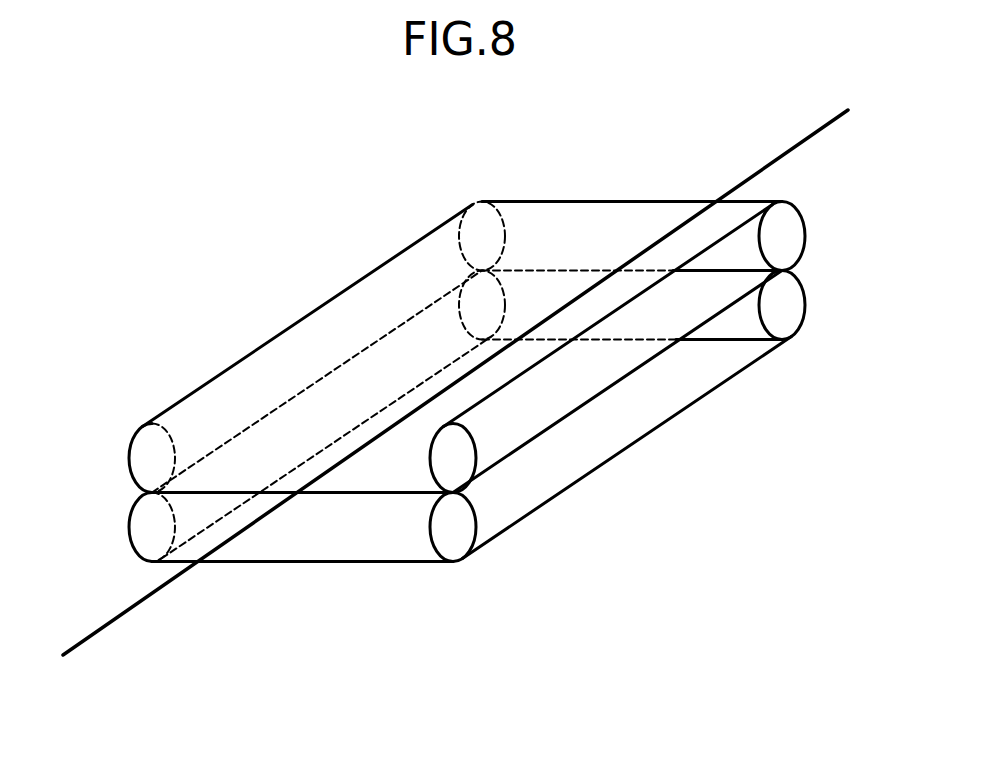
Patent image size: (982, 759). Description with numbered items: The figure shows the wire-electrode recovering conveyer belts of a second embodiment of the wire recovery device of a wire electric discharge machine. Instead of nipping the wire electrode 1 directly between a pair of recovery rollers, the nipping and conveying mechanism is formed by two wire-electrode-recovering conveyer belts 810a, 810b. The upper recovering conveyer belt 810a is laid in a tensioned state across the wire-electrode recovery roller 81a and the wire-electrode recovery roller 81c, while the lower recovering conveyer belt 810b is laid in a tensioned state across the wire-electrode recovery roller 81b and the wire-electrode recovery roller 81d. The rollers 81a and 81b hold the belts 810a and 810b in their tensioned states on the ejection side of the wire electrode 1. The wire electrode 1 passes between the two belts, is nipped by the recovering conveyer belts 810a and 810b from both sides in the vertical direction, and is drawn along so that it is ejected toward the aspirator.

The wire electrode 1 is at (85, 637).
The wire-electrode recovery roller 81a is at (445, 460).
The wire-electrode recovery roller 81b is at (453, 547).
The wire-electrode recovery roller 81c is at (787, 231).
The wire-electrode recovery roller 81d is at (787, 327).
The wire-electrode-recovering conveyer belt 810a is at (607, 313).
The wire-electrode-recovering conveyer belt 810b is at (652, 435).